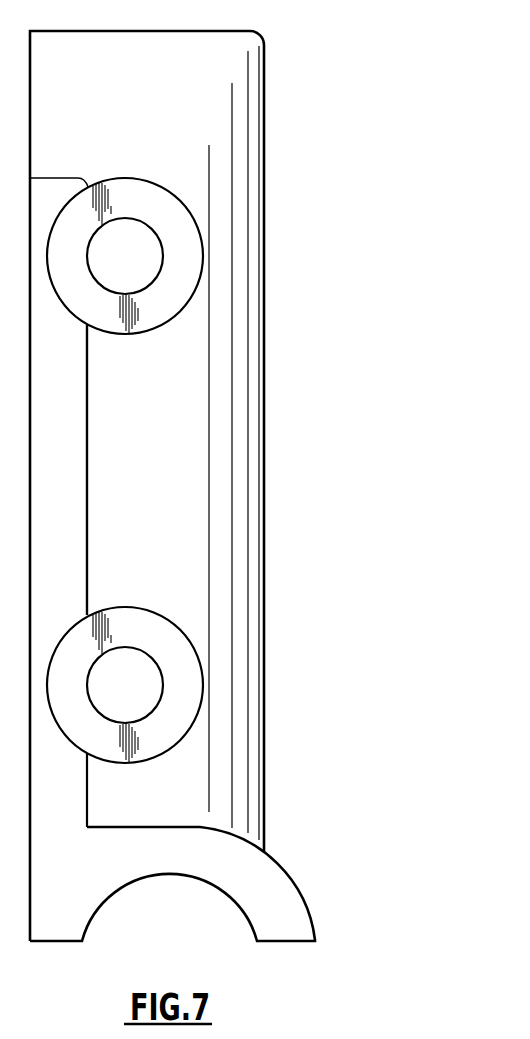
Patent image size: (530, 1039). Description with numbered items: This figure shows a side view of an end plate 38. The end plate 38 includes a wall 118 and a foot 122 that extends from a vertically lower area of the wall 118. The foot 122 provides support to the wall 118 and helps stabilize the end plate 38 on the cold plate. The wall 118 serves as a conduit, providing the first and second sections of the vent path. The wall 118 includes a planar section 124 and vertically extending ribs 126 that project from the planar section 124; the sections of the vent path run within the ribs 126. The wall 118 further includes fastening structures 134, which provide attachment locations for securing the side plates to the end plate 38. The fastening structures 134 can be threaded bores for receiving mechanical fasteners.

The end plate 38 is at (372, 155).
The wall 118 is at (88, 482).
The foot 122 is at (293, 883).
The planar section 124 is at (88, 420).
The ribs 126 is at (265, 583).
The fastening structures 134 is at (203, 256).